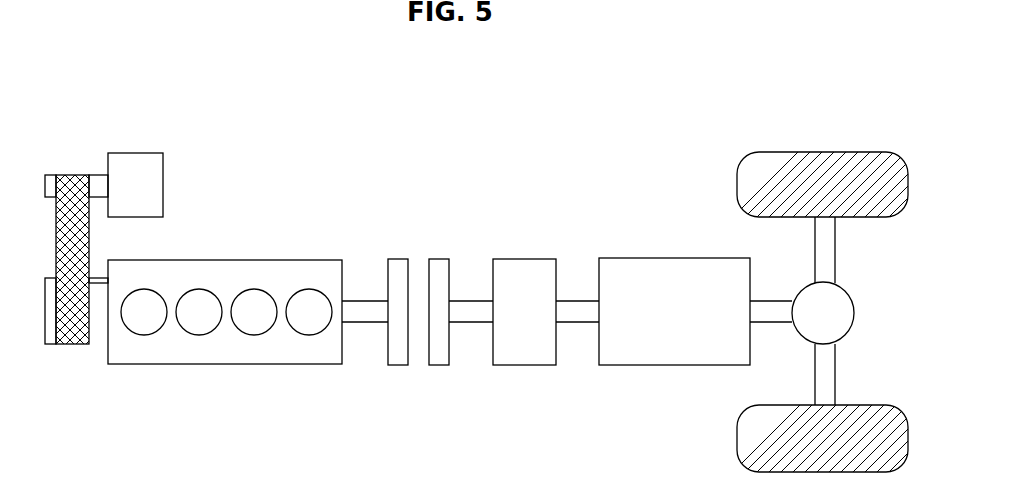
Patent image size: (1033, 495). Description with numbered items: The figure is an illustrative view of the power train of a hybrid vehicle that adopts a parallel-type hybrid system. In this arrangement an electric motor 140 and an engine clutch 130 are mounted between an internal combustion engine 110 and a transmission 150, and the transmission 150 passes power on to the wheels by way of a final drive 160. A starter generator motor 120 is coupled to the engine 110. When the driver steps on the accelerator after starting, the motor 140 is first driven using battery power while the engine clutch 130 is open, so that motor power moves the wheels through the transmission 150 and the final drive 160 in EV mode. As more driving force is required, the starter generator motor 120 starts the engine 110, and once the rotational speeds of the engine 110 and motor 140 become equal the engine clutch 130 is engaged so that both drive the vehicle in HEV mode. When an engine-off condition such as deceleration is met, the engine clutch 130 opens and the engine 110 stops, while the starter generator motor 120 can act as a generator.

The internal combustion engine 110 is at (317, 260).
The starter generator motor 120 is at (163, 161).
The engine clutch 130 is at (437, 259).
The electric motor 140 is at (523, 259).
The transmission 150 is at (671, 258).
The final drive 160 is at (854, 286).